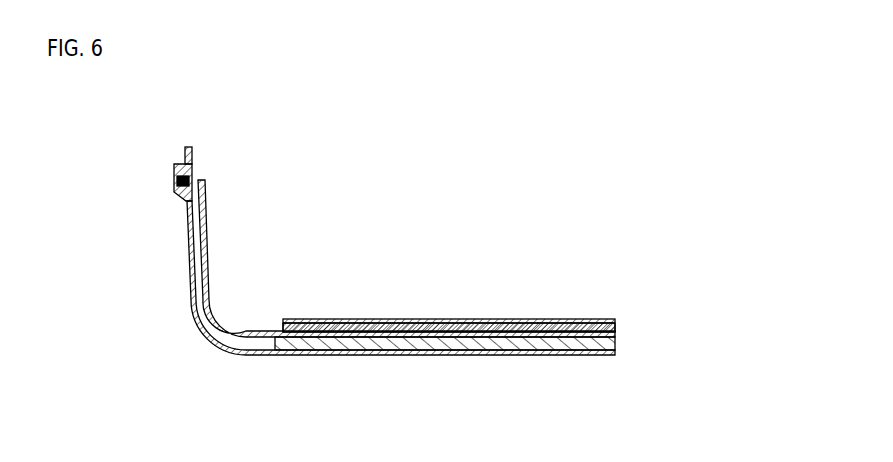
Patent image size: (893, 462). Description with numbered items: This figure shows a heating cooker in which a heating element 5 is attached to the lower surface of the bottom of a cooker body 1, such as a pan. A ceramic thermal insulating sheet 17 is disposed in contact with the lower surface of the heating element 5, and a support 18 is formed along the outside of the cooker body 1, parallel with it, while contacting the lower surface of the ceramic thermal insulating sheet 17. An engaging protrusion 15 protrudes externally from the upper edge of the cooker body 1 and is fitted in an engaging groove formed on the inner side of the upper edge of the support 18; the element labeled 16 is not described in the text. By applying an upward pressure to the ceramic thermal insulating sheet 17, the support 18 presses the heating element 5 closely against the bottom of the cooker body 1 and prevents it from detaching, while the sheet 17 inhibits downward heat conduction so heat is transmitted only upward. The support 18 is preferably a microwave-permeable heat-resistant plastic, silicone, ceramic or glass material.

The cooker body 1 is at (590, 320).
The heating element 5 is at (615, 328).
The engaging protrusion 15 is at (176, 183).
The protrusion 16 is at (176, 181).
The ceramic thermal insulating sheet 17 is at (593, 353).
The support 18 is at (468, 353).